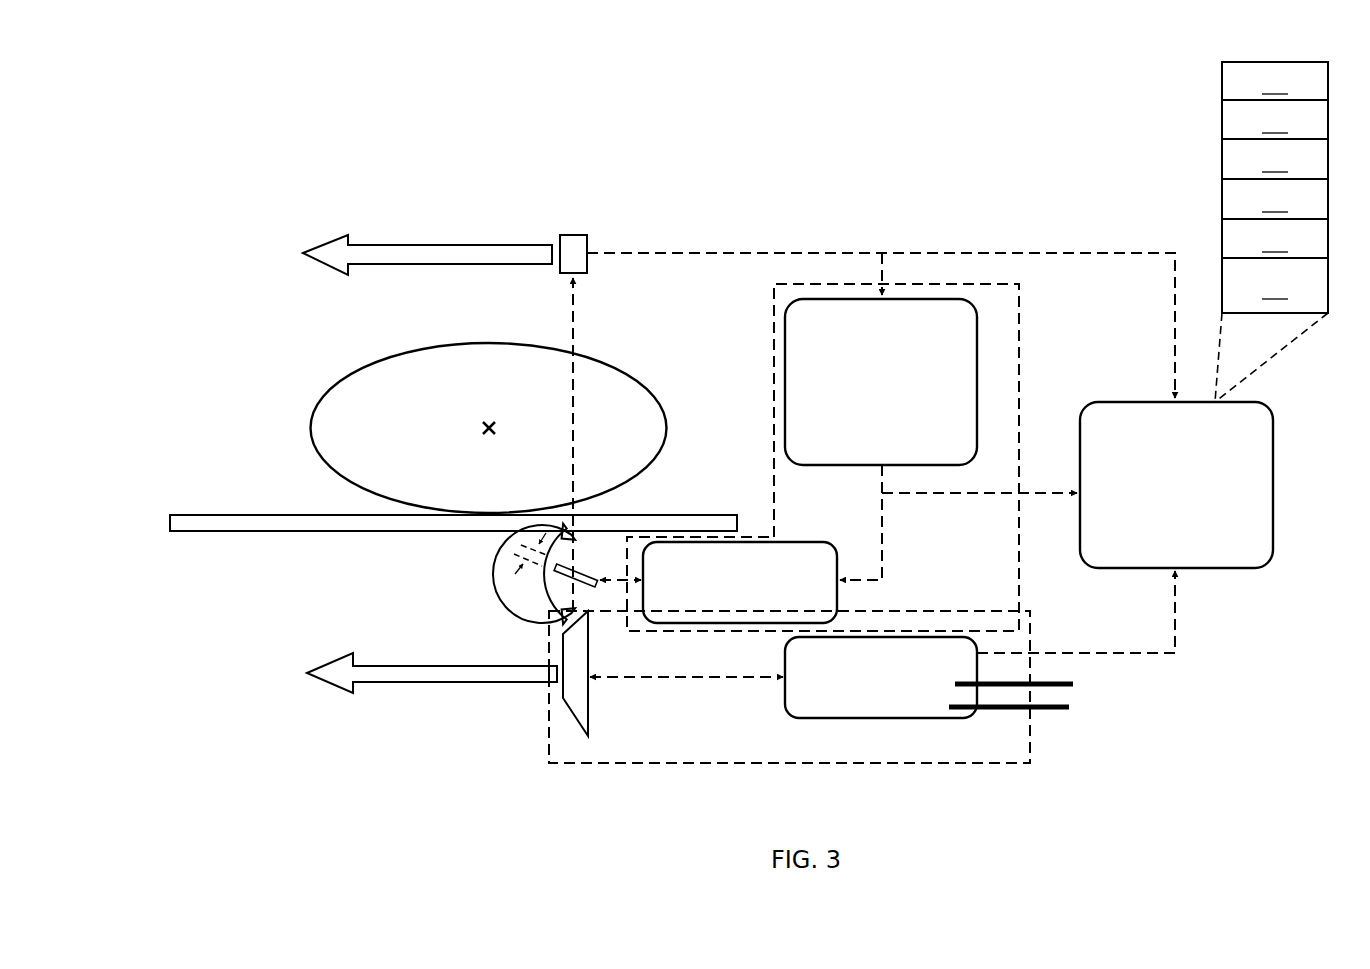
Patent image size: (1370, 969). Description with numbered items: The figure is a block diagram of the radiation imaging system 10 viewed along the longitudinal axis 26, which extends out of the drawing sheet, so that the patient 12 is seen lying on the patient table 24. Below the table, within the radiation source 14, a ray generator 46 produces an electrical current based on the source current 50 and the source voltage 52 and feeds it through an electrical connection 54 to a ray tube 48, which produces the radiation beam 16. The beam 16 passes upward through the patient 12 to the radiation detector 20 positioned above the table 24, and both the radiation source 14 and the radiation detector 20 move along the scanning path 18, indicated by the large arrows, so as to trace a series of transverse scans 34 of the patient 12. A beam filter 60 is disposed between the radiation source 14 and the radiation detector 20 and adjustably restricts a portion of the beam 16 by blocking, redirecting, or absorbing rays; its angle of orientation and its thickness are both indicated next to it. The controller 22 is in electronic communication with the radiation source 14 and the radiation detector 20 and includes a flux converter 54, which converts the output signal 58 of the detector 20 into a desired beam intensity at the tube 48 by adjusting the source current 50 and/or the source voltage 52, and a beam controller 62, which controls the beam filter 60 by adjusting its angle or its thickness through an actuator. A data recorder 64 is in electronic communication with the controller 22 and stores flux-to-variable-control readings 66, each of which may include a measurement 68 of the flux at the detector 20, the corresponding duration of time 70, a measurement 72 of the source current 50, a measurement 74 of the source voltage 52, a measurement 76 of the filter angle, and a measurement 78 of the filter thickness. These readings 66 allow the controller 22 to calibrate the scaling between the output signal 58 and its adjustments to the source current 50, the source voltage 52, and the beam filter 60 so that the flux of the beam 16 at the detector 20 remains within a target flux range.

The system 10 is at (322, 174).
The patient 12 is at (348, 365).
The radiation source 14 is at (878, 764).
The radiation beam 16 is at (578, 325).
The scanning path 18 is at (397, 213).
The radiation detector 20 is at (573, 234).
The controller 22 is at (773, 345).
The patient table 24 is at (302, 535).
The longitudinal axis 26 is at (487, 420).
The transverse scans 34 is at (480, 243).
The ray generator 46 is at (845, 719).
The ray tube 48 is at (589, 718).
The source current 50 is at (1075, 688).
The source voltage 52 is at (1052, 712).
The flux converter 54 is at (978, 357).
The output signal 58 is at (675, 252).
The beam filter 60 is at (590, 567).
The beam controller 62 is at (815, 541).
The data recorder 64 is at (1274, 480).
The flux-to-variable-control readings 66 is at (1177, 90).
The measurement of flux 68 is at (1275, 121).
The duration of time 70 is at (1275, 82).
The measurement of source current 72 is at (1275, 200).
The measurement of source voltage 74 is at (1275, 160).
The measurement of angle of orientation 76 is at (1275, 240).
The measurement of thickness 78 is at (1275, 287).